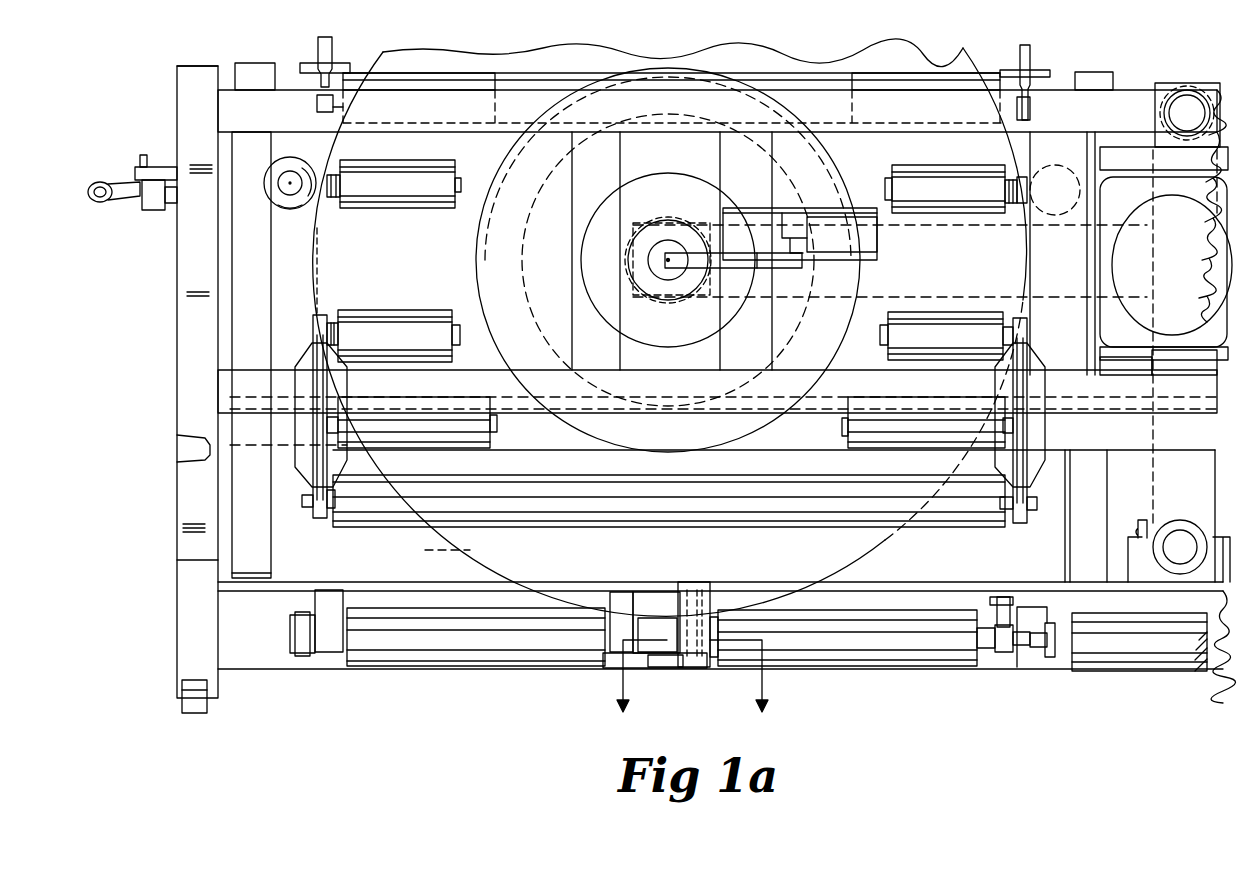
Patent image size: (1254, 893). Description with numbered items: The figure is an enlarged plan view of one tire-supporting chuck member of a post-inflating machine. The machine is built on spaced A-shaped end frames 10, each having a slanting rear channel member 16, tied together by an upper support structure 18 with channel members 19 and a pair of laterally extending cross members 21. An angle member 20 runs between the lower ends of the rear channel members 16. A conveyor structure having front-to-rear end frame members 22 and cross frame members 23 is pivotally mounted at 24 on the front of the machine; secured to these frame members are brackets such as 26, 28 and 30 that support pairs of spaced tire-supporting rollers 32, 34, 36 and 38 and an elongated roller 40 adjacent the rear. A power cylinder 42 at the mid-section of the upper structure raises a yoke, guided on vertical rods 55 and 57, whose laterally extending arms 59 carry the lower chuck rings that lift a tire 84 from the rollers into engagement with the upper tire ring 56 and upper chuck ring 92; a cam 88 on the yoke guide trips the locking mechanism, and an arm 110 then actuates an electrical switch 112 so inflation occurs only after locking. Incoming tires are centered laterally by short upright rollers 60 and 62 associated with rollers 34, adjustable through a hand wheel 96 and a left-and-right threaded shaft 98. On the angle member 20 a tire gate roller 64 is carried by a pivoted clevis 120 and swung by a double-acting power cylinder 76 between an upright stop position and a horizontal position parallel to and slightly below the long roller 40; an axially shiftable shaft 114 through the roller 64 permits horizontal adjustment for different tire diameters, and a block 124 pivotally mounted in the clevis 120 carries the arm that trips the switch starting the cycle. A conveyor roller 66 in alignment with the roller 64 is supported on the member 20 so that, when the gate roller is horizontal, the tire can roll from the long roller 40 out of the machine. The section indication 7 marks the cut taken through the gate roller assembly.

The section line 7- 7 is at (689, 676).
The end frame 10 is at (193, 560).
The rear channel member 16 is at (186, 596).
The upper support structure 18 is at (203, 327).
The channel member 19 is at (190, 372).
The angle member 20 is at (282, 671).
The cross member 21 is at (460, 172).
The end frame member 22 is at (276, 304).
The cross frame member 23 is at (540, 85).
The pivot 24 is at (134, 172).
The bracket 26 is at (332, 54).
The bracket 28 is at (326, 170).
The bracket 30 is at (310, 485).
The tire-supporting roller 32 is at (434, 86).
The tire-supporting roller 34 is at (420, 202).
The tire-supporting roller 36 is at (390, 327).
The tire-supporting roller 38 is at (495, 426).
The elongated roller 40 is at (710, 498).
The power cylinder 42 is at (1195, 226).
The vertically extended rod 55 is at (1186, 110).
The upper tire ring 56 is at (486, 260).
The vertically extended rod 57 is at (1192, 544).
The arm 59 is at (864, 298).
The upright roller 60 is at (302, 207).
The upright roller 62 is at (1032, 226).
The tire gate roller 64 is at (918, 640).
The conveyor roller 66 is at (509, 646).
The double acting power cylinder 76 is at (1130, 658).
The tire 84 is at (670, 332).
The cam 88 is at (1143, 521).
The upper chuck ring 92 is at (680, 184).
The hand wheel 96 is at (104, 198).
The shaft 98 is at (162, 210).
The arm 110 is at (716, 286).
The electrical switch 112 is at (834, 231).
The axially shiftable shaft 114 is at (1007, 652).
The clevis 120 is at (663, 666).
The block 124 is at (648, 632).